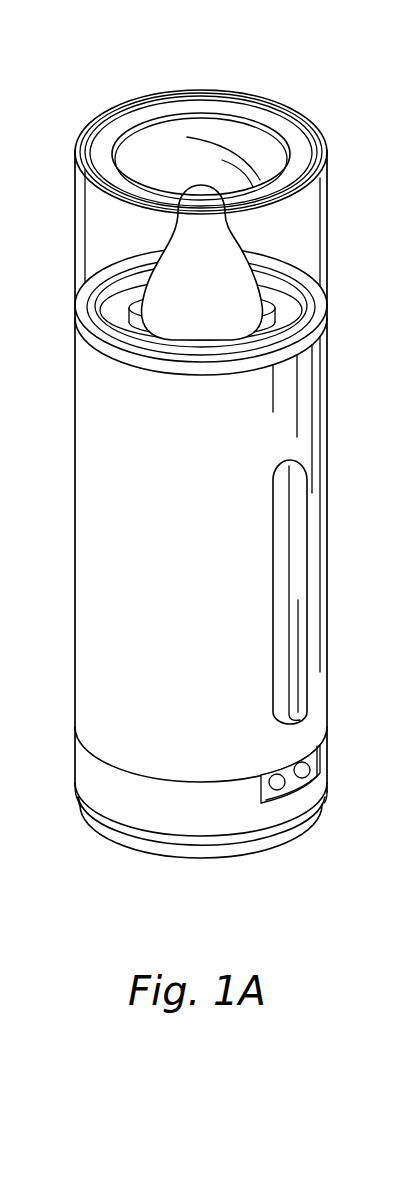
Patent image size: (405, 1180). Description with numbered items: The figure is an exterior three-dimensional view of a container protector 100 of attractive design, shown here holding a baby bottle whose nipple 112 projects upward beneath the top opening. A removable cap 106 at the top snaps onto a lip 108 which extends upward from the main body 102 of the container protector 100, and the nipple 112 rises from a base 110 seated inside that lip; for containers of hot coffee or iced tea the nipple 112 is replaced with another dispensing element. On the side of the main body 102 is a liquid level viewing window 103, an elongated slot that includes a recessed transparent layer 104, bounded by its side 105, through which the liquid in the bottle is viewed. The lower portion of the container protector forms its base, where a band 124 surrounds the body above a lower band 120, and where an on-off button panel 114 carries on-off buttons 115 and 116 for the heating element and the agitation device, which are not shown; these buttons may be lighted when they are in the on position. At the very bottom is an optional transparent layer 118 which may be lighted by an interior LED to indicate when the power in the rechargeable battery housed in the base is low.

The container protector 100 is at (113, 69).
The main body 102 is at (97, 464).
The liquid level viewing window 103 is at (296, 543).
The recessed transparent layer 104 is at (288, 592).
The window side 105 is at (299, 642).
The removable cap 106 is at (98, 216).
The lip 108 is at (130, 255).
The nipple base flange 110 is at (135, 315).
The nipple 112 is at (160, 277).
The on-off button panel 114 is at (290, 766).
The on-off button 115 is at (304, 776).
The on-off button 116 is at (279, 789).
The transparent layer 118 is at (138, 848).
The lower band 120 is at (90, 810).
The band 124 is at (98, 773).